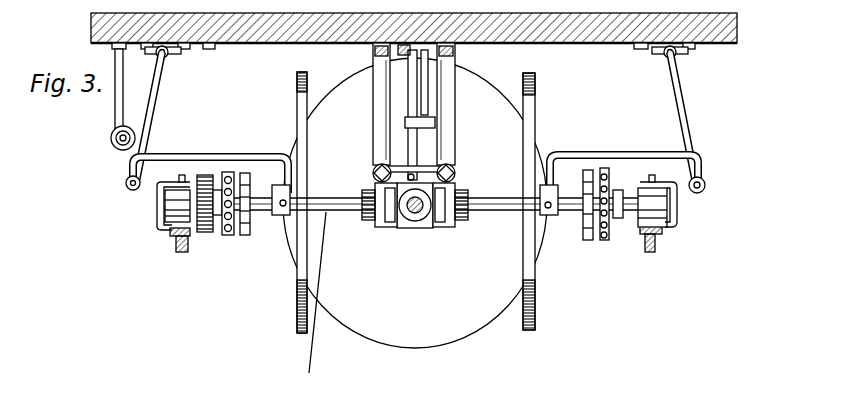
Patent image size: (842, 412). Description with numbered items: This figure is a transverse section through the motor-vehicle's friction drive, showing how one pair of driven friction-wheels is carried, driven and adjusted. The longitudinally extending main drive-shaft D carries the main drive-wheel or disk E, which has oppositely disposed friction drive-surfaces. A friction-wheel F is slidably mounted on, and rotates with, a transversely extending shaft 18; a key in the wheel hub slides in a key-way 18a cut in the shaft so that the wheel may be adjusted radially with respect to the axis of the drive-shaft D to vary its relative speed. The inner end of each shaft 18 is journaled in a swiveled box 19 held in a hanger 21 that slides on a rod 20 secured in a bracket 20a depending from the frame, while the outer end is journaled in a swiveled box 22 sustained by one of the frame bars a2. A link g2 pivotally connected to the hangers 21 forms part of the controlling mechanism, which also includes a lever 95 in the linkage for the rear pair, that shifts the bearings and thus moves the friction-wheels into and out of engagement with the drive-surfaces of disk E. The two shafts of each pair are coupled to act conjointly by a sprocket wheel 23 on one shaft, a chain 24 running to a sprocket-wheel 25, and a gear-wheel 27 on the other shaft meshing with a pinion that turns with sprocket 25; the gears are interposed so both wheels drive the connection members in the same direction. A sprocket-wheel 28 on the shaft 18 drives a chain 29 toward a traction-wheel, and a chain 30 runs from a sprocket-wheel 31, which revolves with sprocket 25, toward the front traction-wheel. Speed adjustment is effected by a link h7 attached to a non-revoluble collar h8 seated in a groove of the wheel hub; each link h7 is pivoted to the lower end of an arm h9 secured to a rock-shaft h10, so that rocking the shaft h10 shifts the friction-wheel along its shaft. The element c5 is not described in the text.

The main drive-wheel or disk E is at (415, 203).
The friction-wheel F is at (296, 318).
The main drive-shaft D is at (417, 215).
The shaft 18 is at (346, 212).
The key-way 18a is at (309, 306).
The swiveled box 19 is at (368, 214).
The rod 20 is at (373, 174).
The bracket 20a is at (474, 122).
The hanger 21 is at (385, 229).
The swiveled box 22 is at (160, 220).
The sprocket wheel 23 is at (603, 241).
The chain 24 is at (247, 237).
The sprocket-wheel 25 is at (248, 172).
The gear-wheel 27 is at (205, 236).
The sprocket-wheel 28 is at (610, 168).
The chain 29 is at (609, 236).
The chain 30 is at (231, 238).
The sprocket-wheel 31 is at (227, 170).
The lever 95 is at (415, 137).
The link g2 is at (420, 167).
The frame bar a2 is at (684, 250).
The rim c5 is at (351, 330).
The link h7 is at (178, 153).
The non-revoluble collar h8 is at (543, 214).
The arm h9 is at (152, 107).
The rock-shaft h10 is at (699, 70).